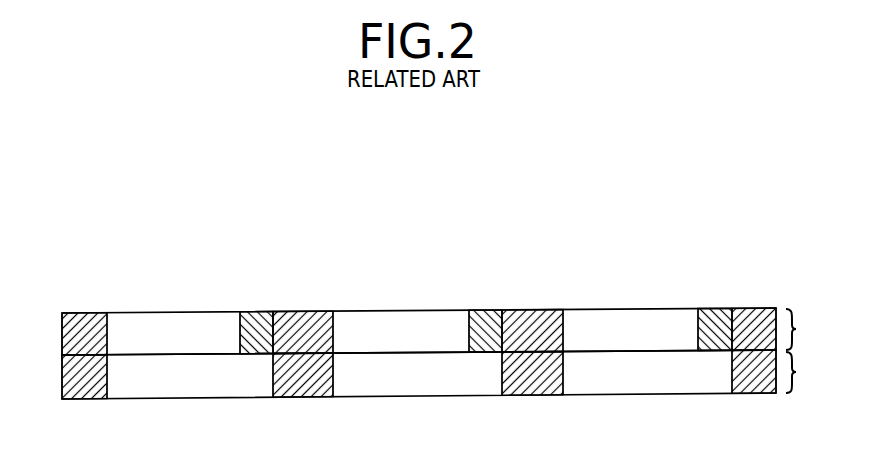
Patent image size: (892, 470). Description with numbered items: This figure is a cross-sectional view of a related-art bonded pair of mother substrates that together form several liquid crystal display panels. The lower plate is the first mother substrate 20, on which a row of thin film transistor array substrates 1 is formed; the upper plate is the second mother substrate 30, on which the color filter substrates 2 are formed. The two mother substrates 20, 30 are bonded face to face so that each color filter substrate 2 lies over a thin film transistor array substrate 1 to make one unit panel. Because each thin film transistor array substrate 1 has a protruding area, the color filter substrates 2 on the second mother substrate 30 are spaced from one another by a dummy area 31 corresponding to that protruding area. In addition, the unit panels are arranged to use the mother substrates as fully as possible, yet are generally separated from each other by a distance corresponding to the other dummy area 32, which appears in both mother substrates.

The thin film transistor array substrate 1 is at (191, 385).
The color filter substrate 2 is at (184, 328).
The first mother substrate 20 is at (804, 372).
The second mother substrate 30 is at (804, 329).
The dummy area 31 is at (258, 317).
The other dummy area 32 is at (82, 325).